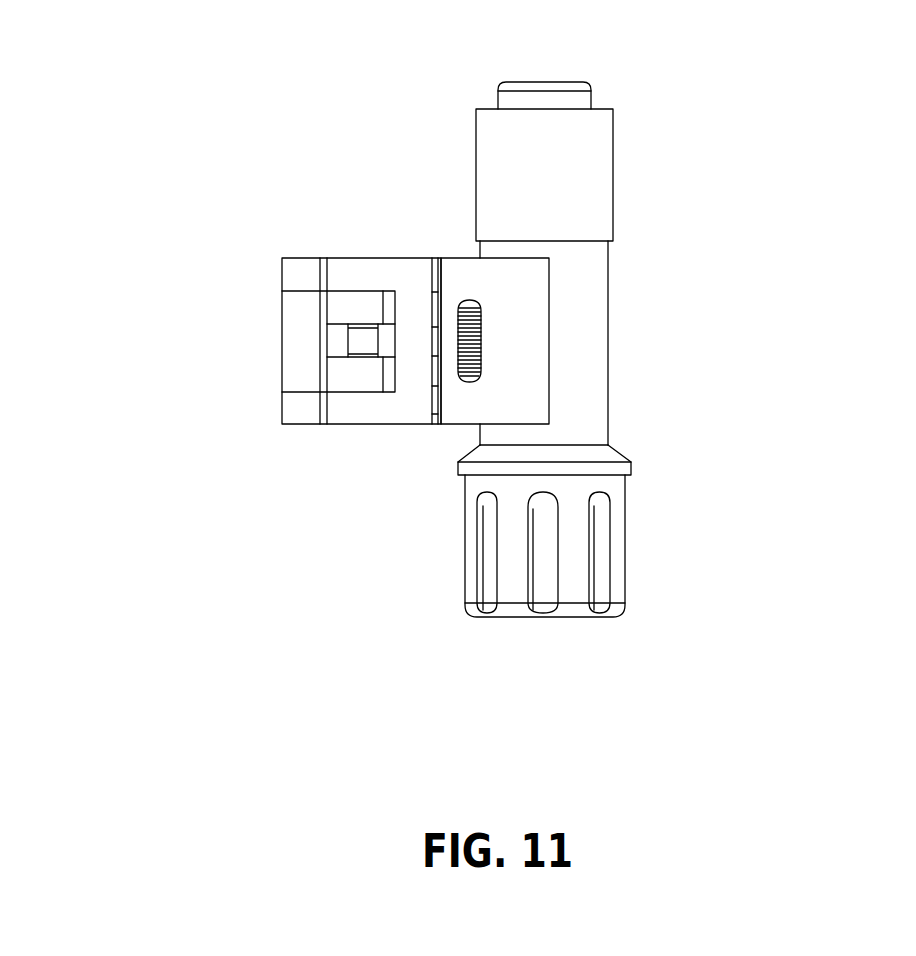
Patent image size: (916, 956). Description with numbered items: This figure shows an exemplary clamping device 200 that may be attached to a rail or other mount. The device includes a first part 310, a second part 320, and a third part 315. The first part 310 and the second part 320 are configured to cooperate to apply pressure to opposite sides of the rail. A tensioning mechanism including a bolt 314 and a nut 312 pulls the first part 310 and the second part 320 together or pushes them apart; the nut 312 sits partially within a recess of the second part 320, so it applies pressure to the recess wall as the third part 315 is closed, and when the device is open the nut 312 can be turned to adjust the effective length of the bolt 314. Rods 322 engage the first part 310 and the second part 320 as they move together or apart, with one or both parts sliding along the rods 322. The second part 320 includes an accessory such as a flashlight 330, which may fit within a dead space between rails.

The connector assembly 200 is at (513, 269).
The first part 310 is at (283, 275).
The nut 312 is at (462, 305).
The bolt 314 is at (338, 342).
The third part 315 is at (300, 370).
The second part 320 is at (533, 308).
The rods 322 is at (428, 395).
The flashlight 330 is at (625, 578).